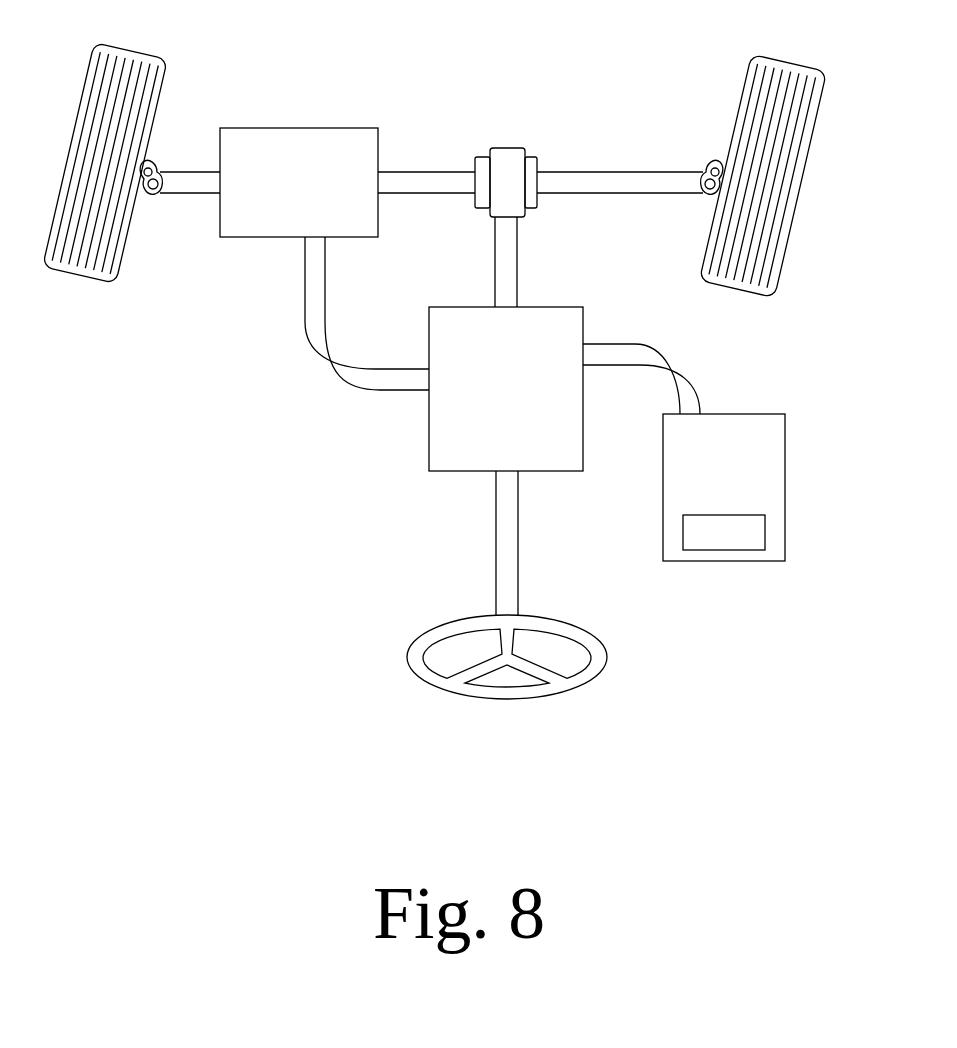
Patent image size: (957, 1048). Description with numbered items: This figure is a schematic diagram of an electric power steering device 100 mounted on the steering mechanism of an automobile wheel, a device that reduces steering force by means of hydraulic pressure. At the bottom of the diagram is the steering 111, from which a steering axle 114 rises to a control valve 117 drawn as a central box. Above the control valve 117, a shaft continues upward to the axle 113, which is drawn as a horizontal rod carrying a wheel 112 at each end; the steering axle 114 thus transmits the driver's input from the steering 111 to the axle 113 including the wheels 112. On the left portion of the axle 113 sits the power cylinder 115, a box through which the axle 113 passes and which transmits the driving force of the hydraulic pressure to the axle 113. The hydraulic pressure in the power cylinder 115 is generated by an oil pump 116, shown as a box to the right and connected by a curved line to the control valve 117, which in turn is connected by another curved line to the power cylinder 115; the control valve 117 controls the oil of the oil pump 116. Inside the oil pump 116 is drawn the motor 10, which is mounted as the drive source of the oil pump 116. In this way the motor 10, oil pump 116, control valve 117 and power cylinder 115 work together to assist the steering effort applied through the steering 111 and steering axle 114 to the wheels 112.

The electric power steering device 100 is at (420, 535).
The steering 111 is at (495, 692).
The wheels 112 is at (87, 253).
The axle 113 is at (570, 183).
The steering axle 114 is at (507, 540).
The power cylinder 115 is at (298, 152).
The oil pump 116 is at (758, 470).
The control valve 117 is at (453, 427).
The motor 10 is at (732, 533).